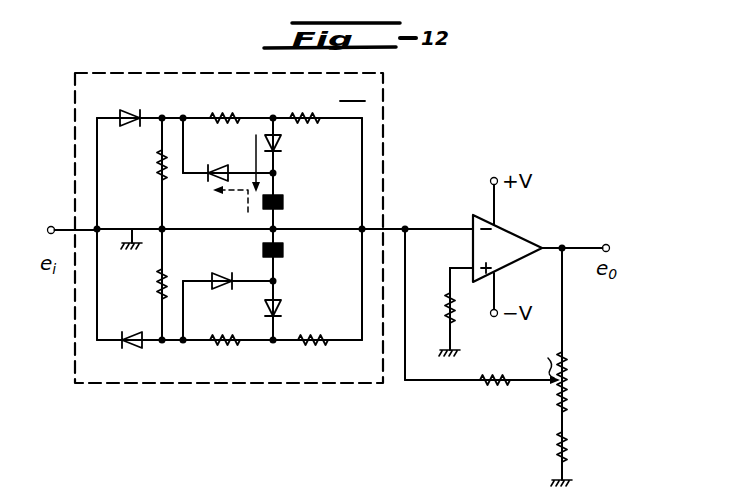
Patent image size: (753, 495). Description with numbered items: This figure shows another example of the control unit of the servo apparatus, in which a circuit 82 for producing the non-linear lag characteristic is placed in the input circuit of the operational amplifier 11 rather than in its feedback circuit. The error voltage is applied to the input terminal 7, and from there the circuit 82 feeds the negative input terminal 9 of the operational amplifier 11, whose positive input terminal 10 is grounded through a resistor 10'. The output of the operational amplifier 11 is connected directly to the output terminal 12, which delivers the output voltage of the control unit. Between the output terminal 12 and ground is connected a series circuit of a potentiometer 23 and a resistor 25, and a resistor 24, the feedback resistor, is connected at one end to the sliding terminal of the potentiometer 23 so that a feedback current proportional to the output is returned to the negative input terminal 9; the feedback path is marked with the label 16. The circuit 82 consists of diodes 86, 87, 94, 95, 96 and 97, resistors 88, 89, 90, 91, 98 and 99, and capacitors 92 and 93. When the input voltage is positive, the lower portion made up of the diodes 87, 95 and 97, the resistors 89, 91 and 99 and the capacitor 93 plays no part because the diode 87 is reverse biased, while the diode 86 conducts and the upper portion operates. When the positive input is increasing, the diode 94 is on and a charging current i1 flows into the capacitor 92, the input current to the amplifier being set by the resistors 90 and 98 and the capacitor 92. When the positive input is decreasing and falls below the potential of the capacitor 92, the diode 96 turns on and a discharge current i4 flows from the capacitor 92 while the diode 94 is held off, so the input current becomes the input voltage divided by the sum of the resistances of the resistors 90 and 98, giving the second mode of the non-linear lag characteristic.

The input terminal 7 is at (51, 226).
The negative input terminal 9 is at (460, 226).
The positive input terminal 10 is at (450, 252).
The resistor 10' is at (471, 319).
The operational amplifier 11 is at (524, 236).
The output terminal 12 is at (606, 244).
The diode 16 is at (352, 91).
The potentiometer 23 is at (568, 388).
The resistor 24 is at (494, 386).
The resistor 25 is at (556, 449).
The circuit for providing the non-linear lag characteristic 82 is at (255, 385).
The diode 86 is at (133, 108).
The diode 87 is at (132, 348).
The resistor 88 is at (156, 170).
The resistor 89 is at (156, 286).
The resistor 90 is at (224, 112).
The resistor 91 is at (224, 346).
The capacitor 92 is at (283, 202).
The capacitor 93 is at (283, 250).
The diode 94 is at (282, 143).
The diode 95 is at (282, 308).
The diode 96 is at (212, 162).
The diode 97 is at (224, 271).
The resistor 98 is at (304, 112).
The resistor 99 is at (312, 346).
The charging current i1 is at (246, 156).
The discharge current i4 is at (229, 209).